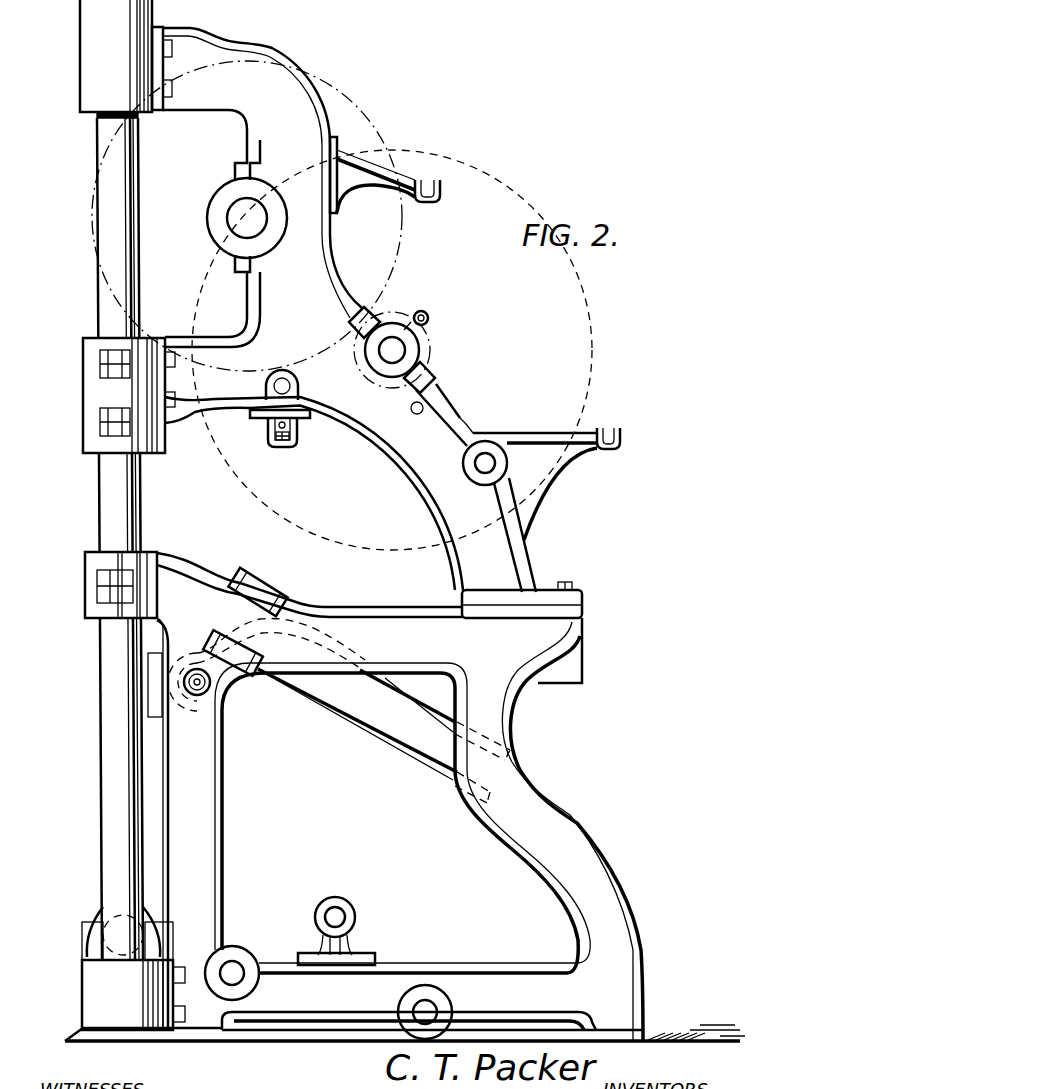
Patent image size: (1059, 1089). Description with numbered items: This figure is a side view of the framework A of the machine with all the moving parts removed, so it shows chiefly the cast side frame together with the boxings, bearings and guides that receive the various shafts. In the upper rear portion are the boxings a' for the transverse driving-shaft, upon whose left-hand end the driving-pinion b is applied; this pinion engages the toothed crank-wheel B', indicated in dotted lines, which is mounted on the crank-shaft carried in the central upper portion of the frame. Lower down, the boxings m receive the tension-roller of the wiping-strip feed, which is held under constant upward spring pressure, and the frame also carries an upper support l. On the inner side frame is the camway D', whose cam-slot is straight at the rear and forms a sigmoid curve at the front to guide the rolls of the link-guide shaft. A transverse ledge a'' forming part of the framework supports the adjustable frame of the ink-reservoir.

The framework A is at (118, 815).
The driving-spur or toothed crank-wheel B' is at (247, 216).
The boxings m is at (290, 443).
The boxings a' is at (392, 338).
The driving-pinion b is at (430, 360).
The upper bracket l is at (446, 180).
The camways D' is at (374, 736).
The transverse ledge a'' is at (560, 670).